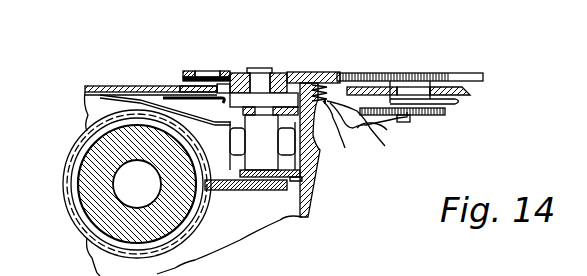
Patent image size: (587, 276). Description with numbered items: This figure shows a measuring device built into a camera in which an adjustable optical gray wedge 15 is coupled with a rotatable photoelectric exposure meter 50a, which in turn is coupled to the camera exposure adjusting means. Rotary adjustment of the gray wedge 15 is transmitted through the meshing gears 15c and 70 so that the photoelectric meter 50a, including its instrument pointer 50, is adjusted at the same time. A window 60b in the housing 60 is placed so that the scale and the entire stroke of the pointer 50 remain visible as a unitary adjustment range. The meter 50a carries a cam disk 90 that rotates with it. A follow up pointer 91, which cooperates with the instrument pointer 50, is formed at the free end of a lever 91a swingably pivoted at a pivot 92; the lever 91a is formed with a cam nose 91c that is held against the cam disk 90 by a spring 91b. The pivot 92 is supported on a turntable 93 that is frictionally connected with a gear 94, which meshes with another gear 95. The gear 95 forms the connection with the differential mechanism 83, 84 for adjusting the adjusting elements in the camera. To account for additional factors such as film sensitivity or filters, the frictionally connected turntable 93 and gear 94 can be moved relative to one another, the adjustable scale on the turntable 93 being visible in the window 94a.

The gray wedge 15 is at (107, 213).
The gear 15c is at (67, 202).
The pointer 50 is at (110, 88).
The photoelectric meter 50a is at (257, 153).
The housing 60 is at (100, 110).
The window 60b is at (153, 89).
The gear 70 is at (230, 190).
The differential mechanism 83 is at (457, 100).
The differential mechanism 84 is at (408, 118).
The cam disk 90 is at (260, 100).
The follow up pointer 91 is at (166, 91).
The lever 91a is at (222, 78).
The spring 91b is at (357, 128).
The cam nose 91c is at (320, 90).
The pivot 92 is at (336, 135).
The turntable 93 is at (213, 75).
The gear 94 is at (293, 77).
The window 94a is at (198, 72).
The gear 95 is at (382, 72).